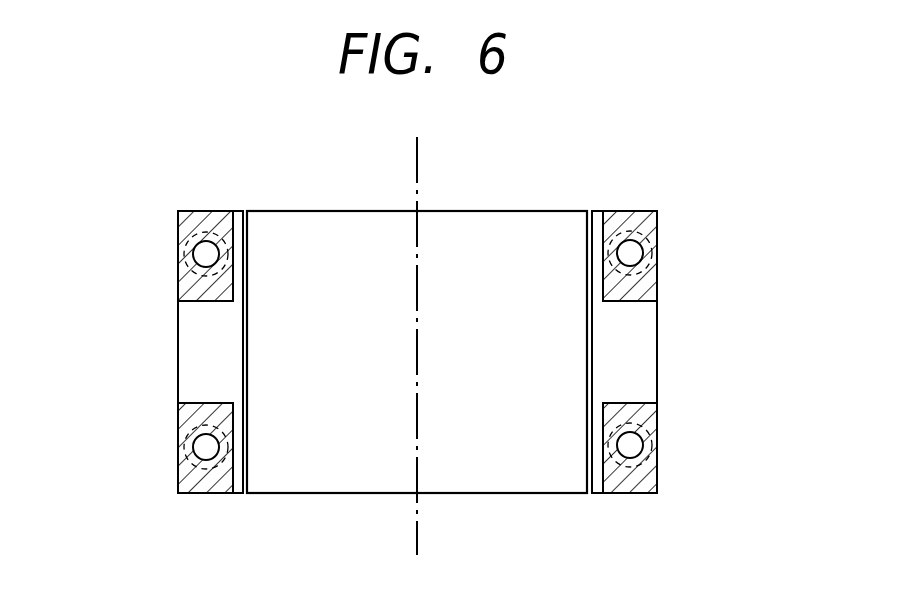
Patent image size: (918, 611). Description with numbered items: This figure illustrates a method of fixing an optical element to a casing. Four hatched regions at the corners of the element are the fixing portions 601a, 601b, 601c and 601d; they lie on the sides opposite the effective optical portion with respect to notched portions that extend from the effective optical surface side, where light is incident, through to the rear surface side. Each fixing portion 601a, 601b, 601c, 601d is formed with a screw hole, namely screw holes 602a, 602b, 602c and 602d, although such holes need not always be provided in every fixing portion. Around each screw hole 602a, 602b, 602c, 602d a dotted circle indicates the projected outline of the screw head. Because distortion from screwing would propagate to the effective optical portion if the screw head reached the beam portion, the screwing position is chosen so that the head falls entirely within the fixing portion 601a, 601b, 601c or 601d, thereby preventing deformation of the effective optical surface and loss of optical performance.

The fixing portion 601a is at (181, 209).
The fixing portion 601b is at (182, 495).
The fixing portion 601c is at (648, 210).
The fixing portion 601d is at (650, 494).
The screw hole 602a is at (211, 241).
The screw hole 602b is at (211, 461).
The screw hole 602c is at (626, 241).
The screw hole 602d is at (625, 459).